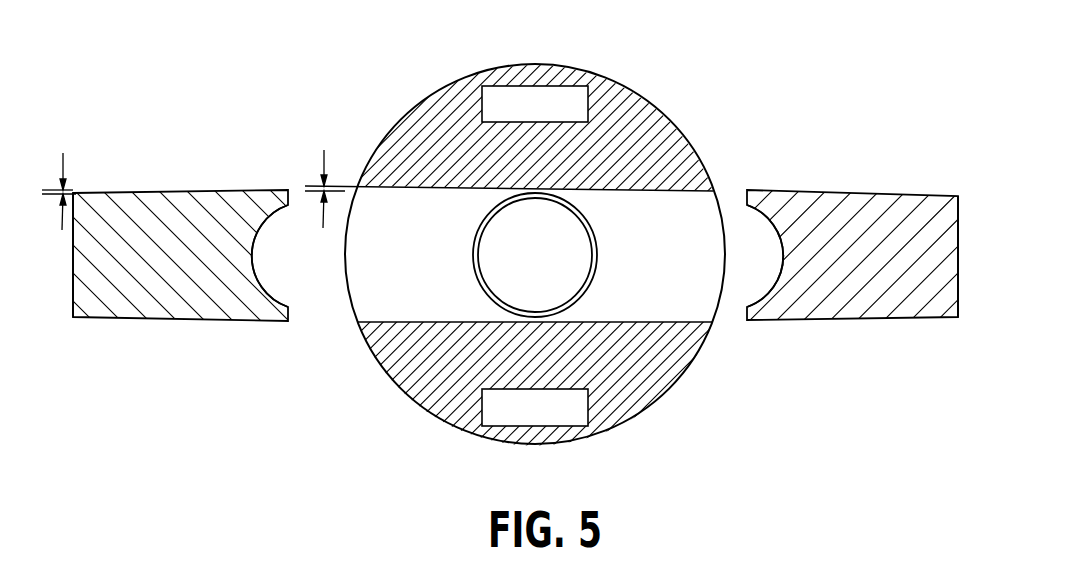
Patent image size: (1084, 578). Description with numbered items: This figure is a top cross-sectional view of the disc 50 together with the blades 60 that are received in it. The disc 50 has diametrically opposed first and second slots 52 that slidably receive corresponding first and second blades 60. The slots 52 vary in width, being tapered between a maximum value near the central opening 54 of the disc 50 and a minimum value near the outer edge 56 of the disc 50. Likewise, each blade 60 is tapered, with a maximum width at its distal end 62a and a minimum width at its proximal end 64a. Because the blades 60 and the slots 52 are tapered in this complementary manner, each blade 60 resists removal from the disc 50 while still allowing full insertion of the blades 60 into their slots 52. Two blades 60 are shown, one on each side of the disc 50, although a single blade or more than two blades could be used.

The disc 50 is at (466, 246).
The slots 52 is at (380, 307).
The central opening 54 is at (520, 298).
The outer edge 56 is at (444, 88).
The blade 60 is at (536, 258).
The distal end 62a is at (278, 320).
The proximal end 64a is at (80, 320).